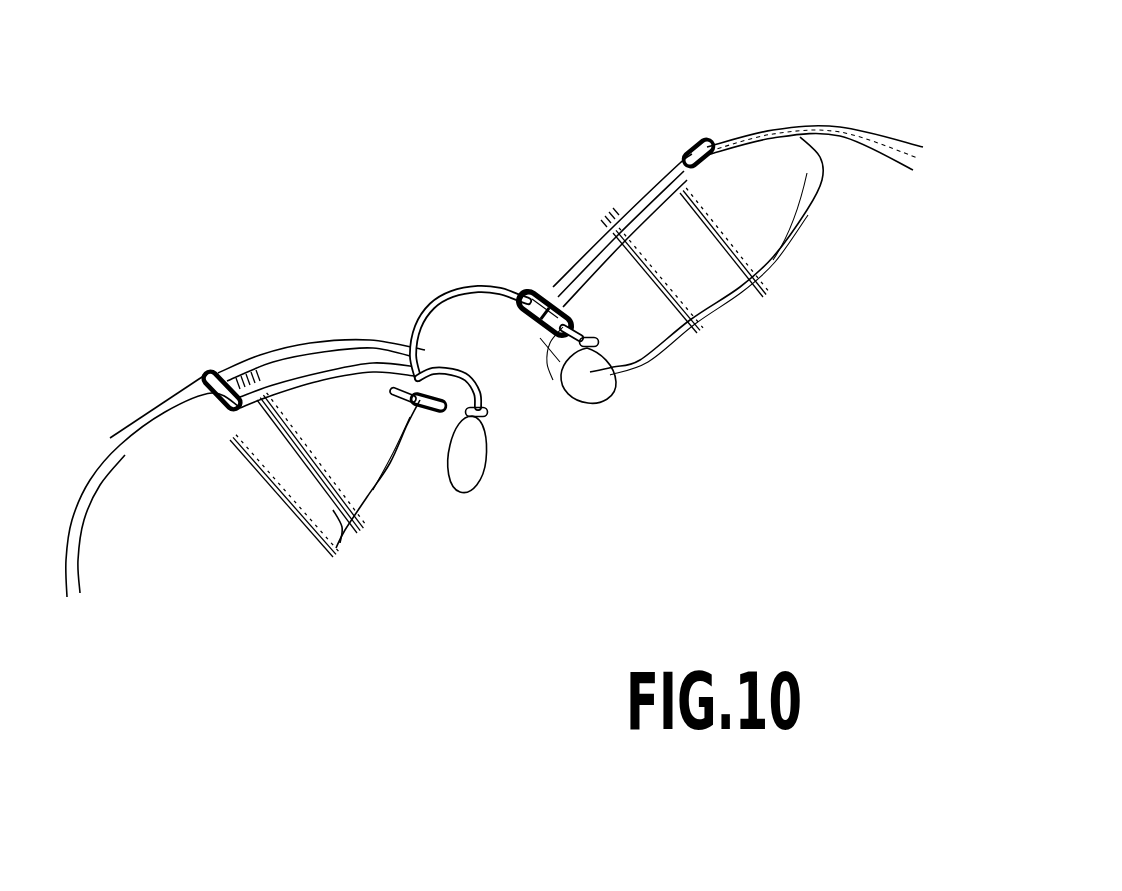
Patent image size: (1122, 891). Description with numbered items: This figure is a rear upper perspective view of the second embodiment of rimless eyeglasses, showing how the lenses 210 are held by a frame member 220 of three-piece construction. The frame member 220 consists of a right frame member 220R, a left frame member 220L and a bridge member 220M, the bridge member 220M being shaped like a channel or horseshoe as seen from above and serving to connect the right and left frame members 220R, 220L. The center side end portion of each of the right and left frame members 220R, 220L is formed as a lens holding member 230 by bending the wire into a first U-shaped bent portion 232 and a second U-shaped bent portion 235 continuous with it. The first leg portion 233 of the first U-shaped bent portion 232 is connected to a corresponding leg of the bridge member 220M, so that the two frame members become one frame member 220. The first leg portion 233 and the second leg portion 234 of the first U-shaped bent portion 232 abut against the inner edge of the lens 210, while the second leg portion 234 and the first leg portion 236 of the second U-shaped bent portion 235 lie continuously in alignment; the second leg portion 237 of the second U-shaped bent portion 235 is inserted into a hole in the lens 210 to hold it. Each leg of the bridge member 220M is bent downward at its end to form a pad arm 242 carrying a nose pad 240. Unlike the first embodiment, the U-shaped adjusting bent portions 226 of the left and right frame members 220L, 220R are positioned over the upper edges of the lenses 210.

The lens 210 is at (340, 545).
The frame member 220 is at (588, 47).
The left frame member 220L is at (318, 380).
The bridge member 220M is at (443, 298).
The right frame member 220R is at (633, 210).
The U-shaped adjusting bent portion 226 is at (205, 375).
The lens holding member 230 is at (517, 318).
The first U-shaped bent portion 232 is at (505, 299).
The first leg portion of first U-shaped bent portion 233 is at (523, 290).
The second leg portion of first U-shaped bent portion 234 is at (526, 322).
The second U-shaped bent portion 235 is at (437, 424).
The first leg portion of second U-shaped bent portion 236 is at (566, 407).
The second leg portion of second U-shaped bent portion 237 is at (412, 405).
The nose pad 240 is at (472, 482).
The pad arm 242 is at (602, 328).